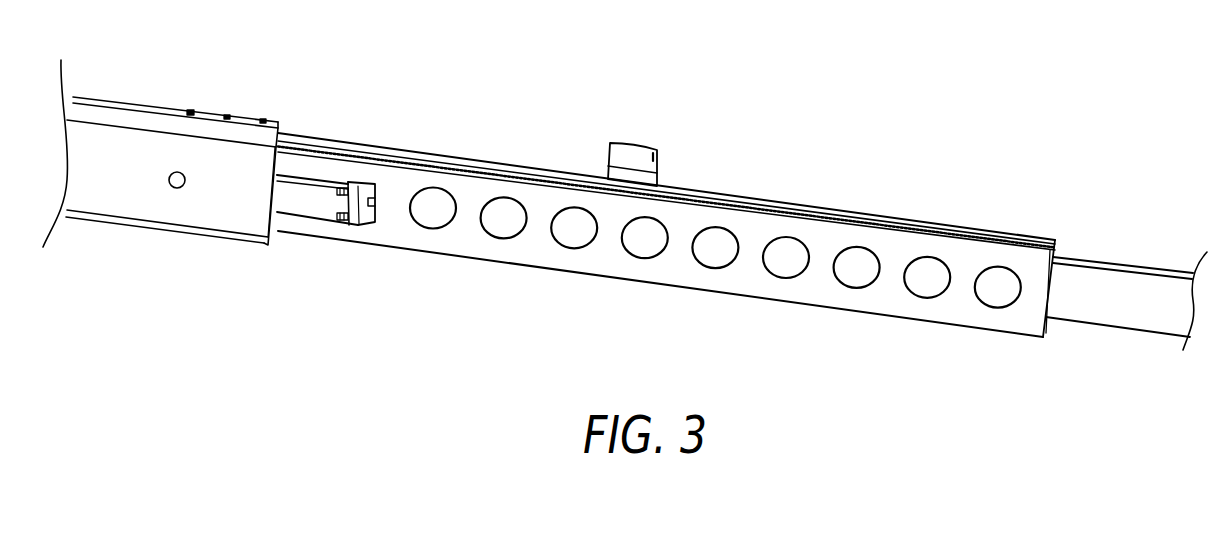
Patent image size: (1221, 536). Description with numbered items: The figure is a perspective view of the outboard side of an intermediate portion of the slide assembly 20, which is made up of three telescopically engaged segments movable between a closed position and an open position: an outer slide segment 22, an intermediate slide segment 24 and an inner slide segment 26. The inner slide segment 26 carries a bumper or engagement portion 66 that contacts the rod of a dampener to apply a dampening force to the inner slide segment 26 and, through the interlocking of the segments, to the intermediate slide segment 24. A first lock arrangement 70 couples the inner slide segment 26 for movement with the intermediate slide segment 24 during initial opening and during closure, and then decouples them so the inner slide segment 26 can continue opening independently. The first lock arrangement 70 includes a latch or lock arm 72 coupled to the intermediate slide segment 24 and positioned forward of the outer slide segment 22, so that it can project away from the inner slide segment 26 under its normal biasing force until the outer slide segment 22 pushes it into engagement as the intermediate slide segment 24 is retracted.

The slide assembly 20 is at (852, 91).
The outer slide segment 22 is at (212, 114).
The intermediate slide segment 24 is at (464, 164).
The inner slide segment 26 is at (1115, 305).
The engagement portion 66 is at (636, 152).
The first lock arrangement 70 is at (309, 252).
The lock arm 72 is at (348, 218).